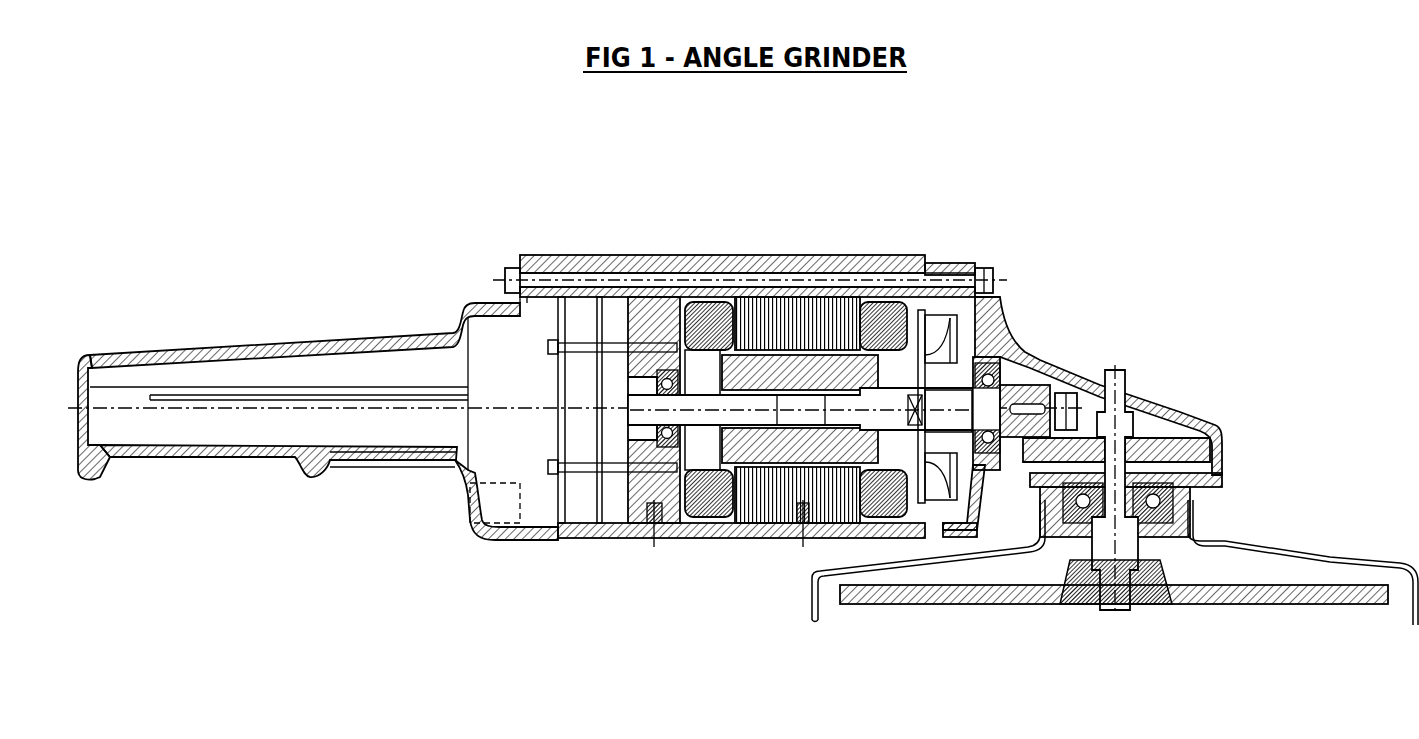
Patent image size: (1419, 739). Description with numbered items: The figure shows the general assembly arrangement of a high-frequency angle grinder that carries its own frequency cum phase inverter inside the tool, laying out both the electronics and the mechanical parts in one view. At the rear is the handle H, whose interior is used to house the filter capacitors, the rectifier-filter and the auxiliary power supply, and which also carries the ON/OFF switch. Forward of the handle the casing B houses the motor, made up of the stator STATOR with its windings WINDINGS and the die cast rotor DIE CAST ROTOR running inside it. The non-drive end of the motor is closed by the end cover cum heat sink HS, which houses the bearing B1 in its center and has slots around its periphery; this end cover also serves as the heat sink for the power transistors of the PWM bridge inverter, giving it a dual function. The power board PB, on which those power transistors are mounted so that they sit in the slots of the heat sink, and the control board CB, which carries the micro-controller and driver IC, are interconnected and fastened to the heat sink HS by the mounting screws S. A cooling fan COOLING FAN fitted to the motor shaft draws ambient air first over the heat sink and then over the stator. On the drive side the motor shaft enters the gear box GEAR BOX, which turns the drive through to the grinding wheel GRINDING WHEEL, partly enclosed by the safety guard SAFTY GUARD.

The handle H is at (300, 455).
The casing B is at (718, 252).
The bearing B1 is at (708, 505).
The control board CB is at (558, 522).
The power board PB is at (598, 519).
The mounting screws S is at (550, 358).
The heat sink HS is at (650, 314).
The stator STATOR is at (757, 300).
The windings WINDINGS is at (886, 308).
The die-cast rotor DIE CAST ROTOR is at (829, 356).
The cooling fan COOLING FAN is at (961, 341).
The gear box GEAR BOX is at (1295, 358).
The safety guard SAFTY GUARD is at (1410, 507).
The grinding wheel GRINDING WHEEL is at (1157, 667).